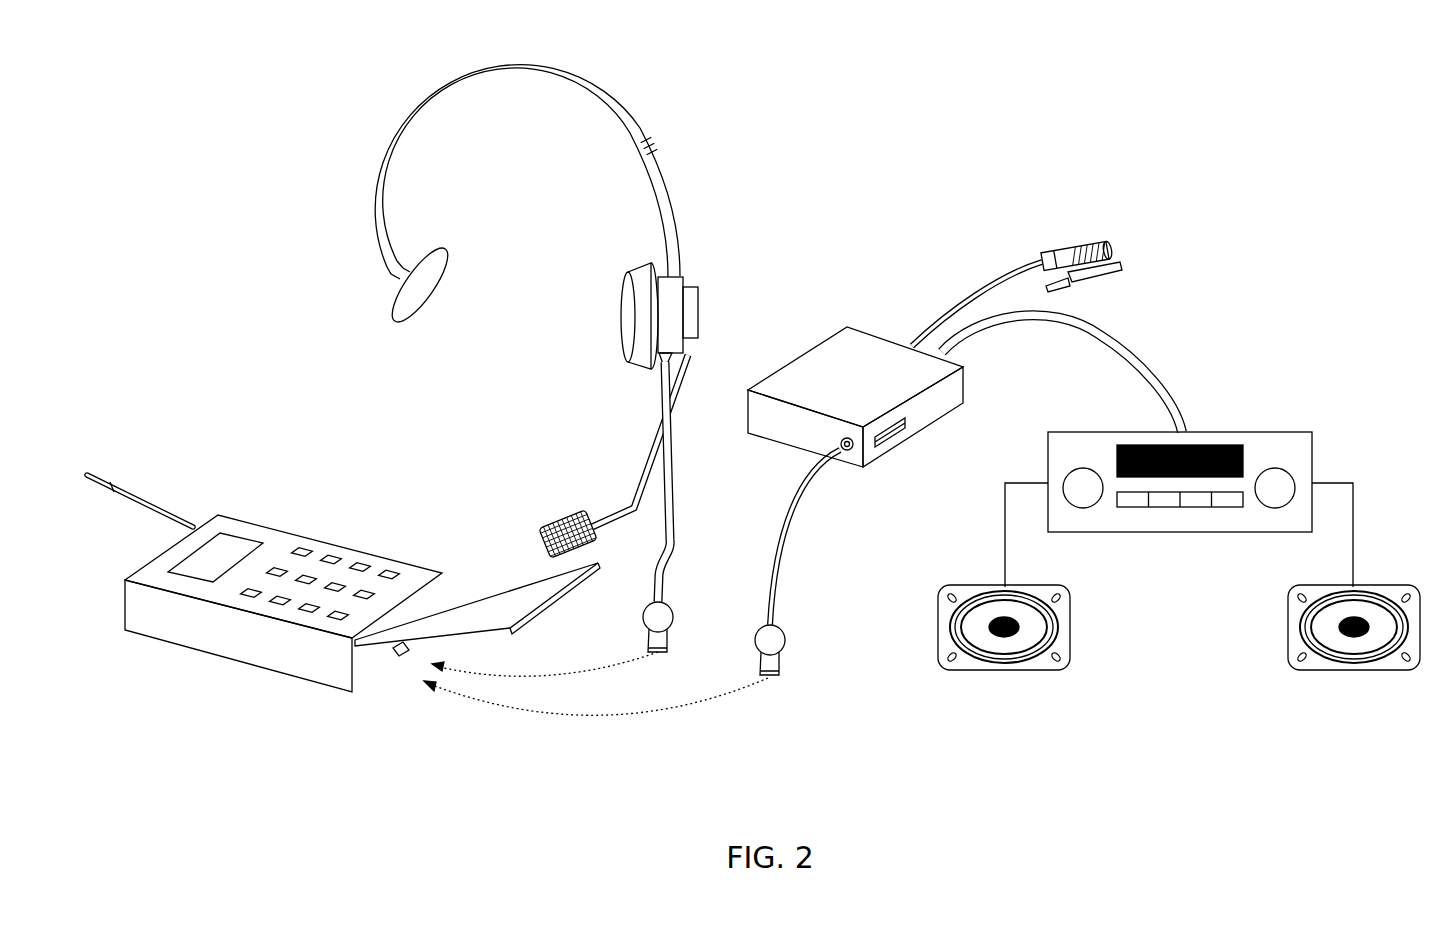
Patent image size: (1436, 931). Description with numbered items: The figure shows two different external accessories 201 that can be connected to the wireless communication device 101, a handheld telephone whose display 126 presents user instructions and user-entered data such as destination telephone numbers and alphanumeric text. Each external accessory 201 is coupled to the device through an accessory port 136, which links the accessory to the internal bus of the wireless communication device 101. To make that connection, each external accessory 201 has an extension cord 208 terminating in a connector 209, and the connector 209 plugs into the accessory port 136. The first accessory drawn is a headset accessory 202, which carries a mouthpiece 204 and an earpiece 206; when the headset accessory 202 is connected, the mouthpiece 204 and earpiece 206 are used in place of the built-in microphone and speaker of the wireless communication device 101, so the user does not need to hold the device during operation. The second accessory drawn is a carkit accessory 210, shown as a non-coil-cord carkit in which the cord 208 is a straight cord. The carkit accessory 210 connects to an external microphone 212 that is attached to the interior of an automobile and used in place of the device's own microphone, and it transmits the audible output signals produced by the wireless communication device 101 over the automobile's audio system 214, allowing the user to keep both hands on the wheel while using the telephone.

The wireless communication device 101 is at (240, 518).
The display 126 is at (222, 563).
The accessory port 136 is at (409, 656).
The external accessory 201 is at (794, 128).
The headset accessory 202 is at (571, 57).
The mouthpiece 204 is at (540, 540).
The earpiece 206 is at (635, 370).
The extension cord 208 is at (675, 452).
The connector 209 is at (670, 636).
The carkit accessory 210 is at (927, 238).
The external microphone 212 is at (1058, 253).
The audio system 214 is at (1248, 432).